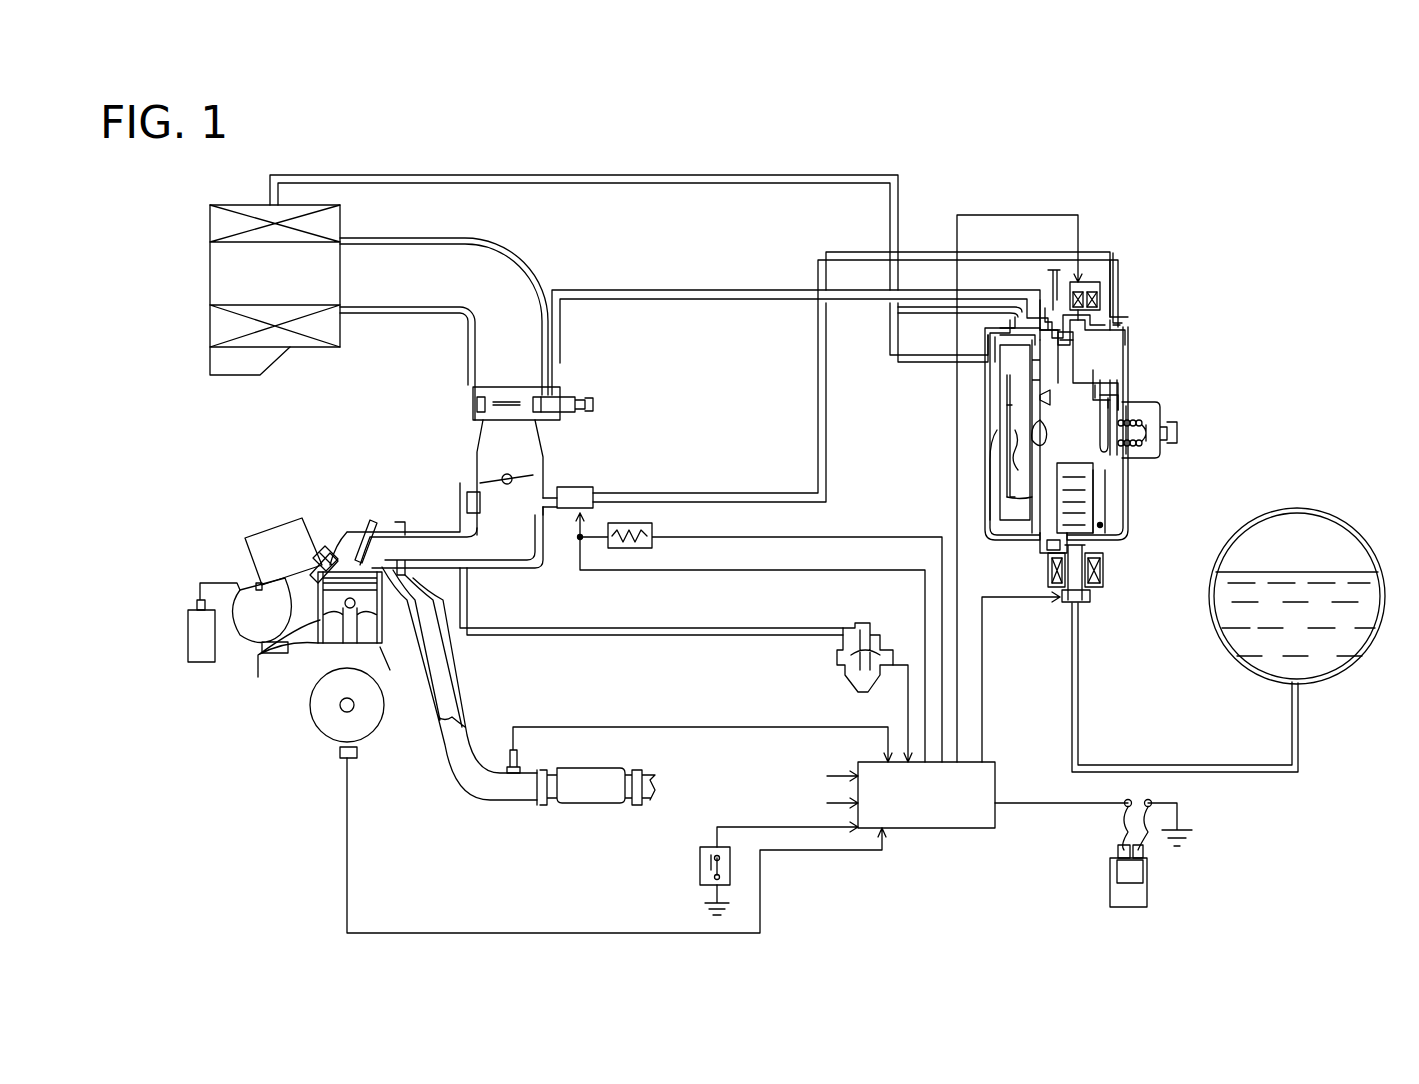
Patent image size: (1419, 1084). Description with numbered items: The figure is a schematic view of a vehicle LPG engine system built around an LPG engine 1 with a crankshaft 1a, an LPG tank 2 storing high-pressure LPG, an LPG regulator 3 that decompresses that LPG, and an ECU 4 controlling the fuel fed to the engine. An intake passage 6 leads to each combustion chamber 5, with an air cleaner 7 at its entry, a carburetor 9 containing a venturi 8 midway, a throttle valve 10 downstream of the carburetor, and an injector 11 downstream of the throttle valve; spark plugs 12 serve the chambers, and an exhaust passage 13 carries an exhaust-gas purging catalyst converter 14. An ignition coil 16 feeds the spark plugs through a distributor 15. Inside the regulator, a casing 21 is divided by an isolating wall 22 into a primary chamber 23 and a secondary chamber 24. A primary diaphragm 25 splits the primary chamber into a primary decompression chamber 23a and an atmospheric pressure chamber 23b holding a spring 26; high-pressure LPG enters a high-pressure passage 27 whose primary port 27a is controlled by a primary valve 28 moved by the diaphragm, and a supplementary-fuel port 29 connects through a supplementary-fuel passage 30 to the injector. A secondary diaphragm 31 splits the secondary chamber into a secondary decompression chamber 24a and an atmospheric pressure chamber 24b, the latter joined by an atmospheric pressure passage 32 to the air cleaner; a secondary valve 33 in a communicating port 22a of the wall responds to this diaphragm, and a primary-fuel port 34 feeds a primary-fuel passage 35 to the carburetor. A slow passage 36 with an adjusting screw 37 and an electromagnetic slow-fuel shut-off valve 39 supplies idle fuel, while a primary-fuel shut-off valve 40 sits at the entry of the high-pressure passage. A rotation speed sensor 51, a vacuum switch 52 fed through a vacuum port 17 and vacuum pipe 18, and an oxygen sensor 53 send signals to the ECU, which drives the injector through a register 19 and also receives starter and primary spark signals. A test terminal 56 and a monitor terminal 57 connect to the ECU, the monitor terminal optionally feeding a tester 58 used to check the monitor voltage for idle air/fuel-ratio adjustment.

The LPG engine 1 is at (337, 518).
The crankshaft 1a is at (340, 707).
The LPG tank 2 is at (1338, 500).
The LPG regulator 3 is at (1138, 508).
The electronic control unit (ECU) 4 is at (970, 834).
The combustion chamber 5 is at (368, 540).
The intake passage 6 is at (495, 255).
The air cleaner 7 is at (285, 345).
The venturi 8 is at (487, 390).
The carburetor 9 is at (548, 430).
The throttle valve 10 is at (487, 470).
The injector 11 is at (575, 488).
The spark plug 12 is at (318, 560).
The exhaust passage 13 is at (460, 683).
The exhaust-gas purging catalyst converter 14 is at (590, 800).
The distributor 15 is at (262, 637).
The ignition coil 16 is at (205, 655).
The vacuum port 17 is at (465, 483).
The vacuum pipe 18 is at (655, 637).
The register 19 is at (660, 535).
The casing 21 is at (1128, 528).
The isolating wall 22 is at (1045, 540).
The communicating port 22a is at (1000, 340).
The primary chamber 23 is at (1212, 340).
The primary decompression chamber 23a is at (1100, 392).
The atmospheric pressure chamber 23b is at (1110, 402).
The secondary chamber 24 is at (890, 385).
The secondary decompression chamber 24a is at (1012, 395).
The atmospheric pressure chamber 24b is at (975, 455).
The primary diaphragm 25 is at (1115, 355).
The spring 26 is at (1130, 450).
The high-pressure passage 27 is at (1090, 512).
The primary port 27a is at (1080, 370).
The primary valve 28 is at (1160, 418).
The supplementary-fuel port 29 is at (1120, 333).
The supplementary-fuel passage 30 is at (832, 254).
The secondary diaphragm 31 is at (1005, 500).
The atmospheric pressure passage 32 is at (668, 175).
The secondary valve 33 is at (1032, 365).
The primary-fuel port 34 is at (945, 310).
The primary-fuel passage 35 is at (632, 297).
The slow passage 36 is at (1040, 312).
The adjusting screw 37 is at (1053, 270).
The slow-fuel shut-off valve 39 is at (1110, 282).
The primary-fuel shut-off valve 40 is at (1095, 598).
The rotation speed sensor 51 is at (357, 755).
The vacuum switch 52 is at (840, 660).
The oxygen sensor 53 is at (520, 760).
The test terminal 56 is at (697, 875).
The monitor terminal 57 is at (1133, 793).
The tester 58 is at (1148, 888).